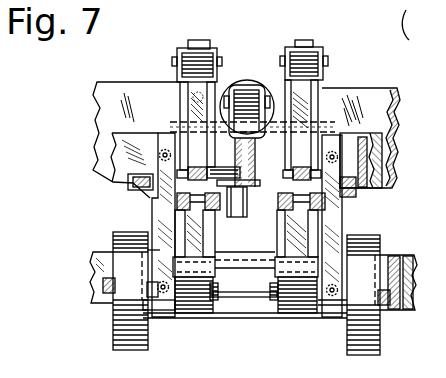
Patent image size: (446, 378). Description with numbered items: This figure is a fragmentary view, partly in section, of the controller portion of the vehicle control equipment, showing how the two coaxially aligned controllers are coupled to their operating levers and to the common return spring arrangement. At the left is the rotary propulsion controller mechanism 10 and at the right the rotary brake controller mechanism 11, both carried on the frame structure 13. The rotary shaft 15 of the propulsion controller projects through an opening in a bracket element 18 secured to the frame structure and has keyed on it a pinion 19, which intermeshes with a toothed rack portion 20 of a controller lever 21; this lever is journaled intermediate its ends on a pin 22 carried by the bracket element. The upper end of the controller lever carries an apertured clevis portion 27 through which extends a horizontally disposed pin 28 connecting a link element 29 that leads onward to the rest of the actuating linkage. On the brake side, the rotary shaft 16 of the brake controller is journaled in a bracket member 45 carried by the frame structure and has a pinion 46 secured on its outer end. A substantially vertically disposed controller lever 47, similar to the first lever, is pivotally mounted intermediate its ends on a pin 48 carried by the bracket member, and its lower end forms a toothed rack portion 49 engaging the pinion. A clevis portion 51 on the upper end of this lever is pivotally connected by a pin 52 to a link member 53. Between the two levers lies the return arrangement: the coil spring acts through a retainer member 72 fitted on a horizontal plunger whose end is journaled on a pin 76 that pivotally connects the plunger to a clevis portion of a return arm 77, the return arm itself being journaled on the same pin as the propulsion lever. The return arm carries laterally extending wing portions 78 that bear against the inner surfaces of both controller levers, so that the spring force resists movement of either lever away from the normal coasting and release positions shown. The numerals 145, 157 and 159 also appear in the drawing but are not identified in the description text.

The rotary propulsion controller mechanism 10 is at (125, 326).
The rotary brake controller mechanism 11 is at (367, 325).
The frame structure 13 is at (373, 100).
The rotary shaft 15 is at (215, 295).
The rotary shaft 16 is at (275, 303).
The bracket element 18 is at (167, 204).
The pinion 19 is at (195, 303).
The toothed rack portion 20 is at (215, 267).
The controller lever 21 is at (193, 203).
The pin 22 is at (133, 187).
The clevis portion 27 is at (182, 81).
The pin 28 is at (180, 57).
The link element 29 is at (195, 52).
The bracket member 45 is at (333, 230).
The pinion 46 is at (300, 277).
The controller lever 47 is at (303, 110).
The pin 48 is at (372, 197).
The toothed rack portion 49 is at (277, 260).
The clevis portion 51 is at (320, 80).
The pin 52 is at (282, 61).
The link member 53 is at (297, 58).
The retainer member 72 is at (247, 88).
The pin 76 is at (226, 95).
The return arm 77 is at (248, 160).
The wing portions 78 is at (225, 131).
The element 145 is at (421, 23).
The element 157 is at (398, 0).
The element 159 is at (424, 37).